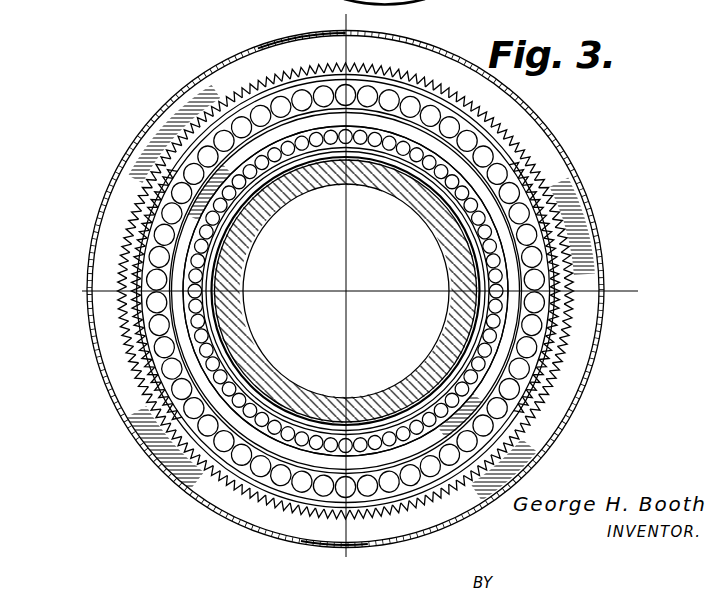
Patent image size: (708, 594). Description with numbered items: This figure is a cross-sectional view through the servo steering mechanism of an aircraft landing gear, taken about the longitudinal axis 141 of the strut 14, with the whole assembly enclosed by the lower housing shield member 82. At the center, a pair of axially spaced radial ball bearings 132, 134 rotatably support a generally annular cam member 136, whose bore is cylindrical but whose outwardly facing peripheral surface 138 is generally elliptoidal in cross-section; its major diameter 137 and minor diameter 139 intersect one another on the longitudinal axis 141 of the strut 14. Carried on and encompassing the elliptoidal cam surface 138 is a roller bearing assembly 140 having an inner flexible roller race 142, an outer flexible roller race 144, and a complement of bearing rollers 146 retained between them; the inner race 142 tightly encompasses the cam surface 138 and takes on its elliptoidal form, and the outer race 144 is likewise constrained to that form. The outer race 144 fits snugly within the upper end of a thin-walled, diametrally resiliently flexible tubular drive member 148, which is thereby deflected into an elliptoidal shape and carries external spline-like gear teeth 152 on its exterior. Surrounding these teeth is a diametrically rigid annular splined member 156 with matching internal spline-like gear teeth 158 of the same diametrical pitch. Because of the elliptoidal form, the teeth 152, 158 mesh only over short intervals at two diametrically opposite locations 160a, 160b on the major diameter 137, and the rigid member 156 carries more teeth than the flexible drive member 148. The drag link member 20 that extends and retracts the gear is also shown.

The strut 14 is at (120, 240).
The drag link member 20 is at (257, 224).
The lower housing shield member 82 is at (106, 382).
The radial ball bearing 132 is at (127, 197).
The radial ball bearing 134 is at (345, 291).
The cam member 136 is at (487, 190).
The major diameter 137 is at (346, 219).
The elliptoidal cam surface 138 is at (340, 91).
The minor diameter 139 is at (403, 292).
The roller bearing assembly 140 is at (138, 172).
The longitudinal axis 141 is at (340, 295).
The inner flexible roller race 142 is at (267, 114).
The outer flexible roller race 144 is at (160, 148).
The bearing rollers 146 is at (283, 78).
The tubular drive member 148 is at (555, 332).
The external spline-like gear teeth 152 is at (542, 276).
The annular splined member 156 is at (587, 278).
The internal spline-like gear teeth 158 is at (570, 303).
The meshing engagement location 160a is at (381, 45).
The meshing engagement location 160b is at (362, 517).